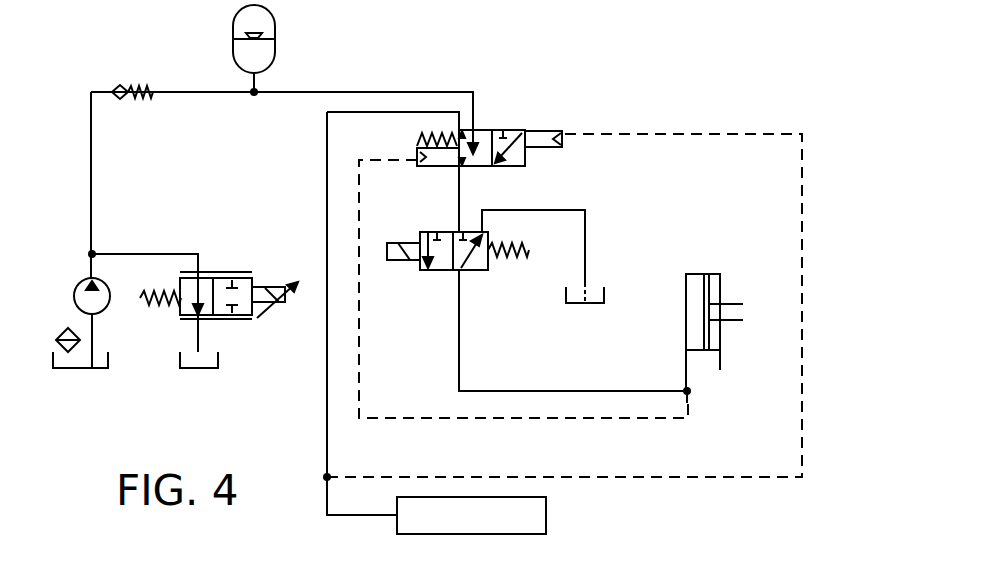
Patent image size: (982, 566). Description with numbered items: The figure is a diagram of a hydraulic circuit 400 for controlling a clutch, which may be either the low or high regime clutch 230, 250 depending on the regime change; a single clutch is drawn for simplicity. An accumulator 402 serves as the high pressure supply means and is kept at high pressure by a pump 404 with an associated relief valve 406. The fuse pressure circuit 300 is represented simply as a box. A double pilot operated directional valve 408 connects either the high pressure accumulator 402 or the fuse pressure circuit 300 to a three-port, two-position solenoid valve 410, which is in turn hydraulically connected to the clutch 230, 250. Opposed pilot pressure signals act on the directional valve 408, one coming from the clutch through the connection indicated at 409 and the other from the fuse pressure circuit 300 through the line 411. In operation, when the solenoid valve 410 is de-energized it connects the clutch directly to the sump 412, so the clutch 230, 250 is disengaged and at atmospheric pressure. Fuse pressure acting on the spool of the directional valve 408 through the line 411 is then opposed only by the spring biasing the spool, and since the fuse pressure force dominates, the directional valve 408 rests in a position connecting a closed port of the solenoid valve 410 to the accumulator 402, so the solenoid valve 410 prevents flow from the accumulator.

The accumulator 402 is at (233, 32).
The pump 404 is at (86, 280).
The relief valve 406 is at (237, 320).
The double pilot operated directional valve 408 is at (503, 128).
The three-port, two-position solenoid valve 410 is at (432, 272).
The sump 412 is at (580, 305).
The low regime clutch 230 is at (732, 302).
The high regime clutch 250 is at (730, 292).
The pilot pressure signal from the clutch 409 is at (488, 418).
The pilot pressure signal line from the fuse pressure circuit 411 is at (805, 155).
The hydraulic circuit 400 is at (806, 250).
The fuse pressure circuit 300 is at (457, 531).